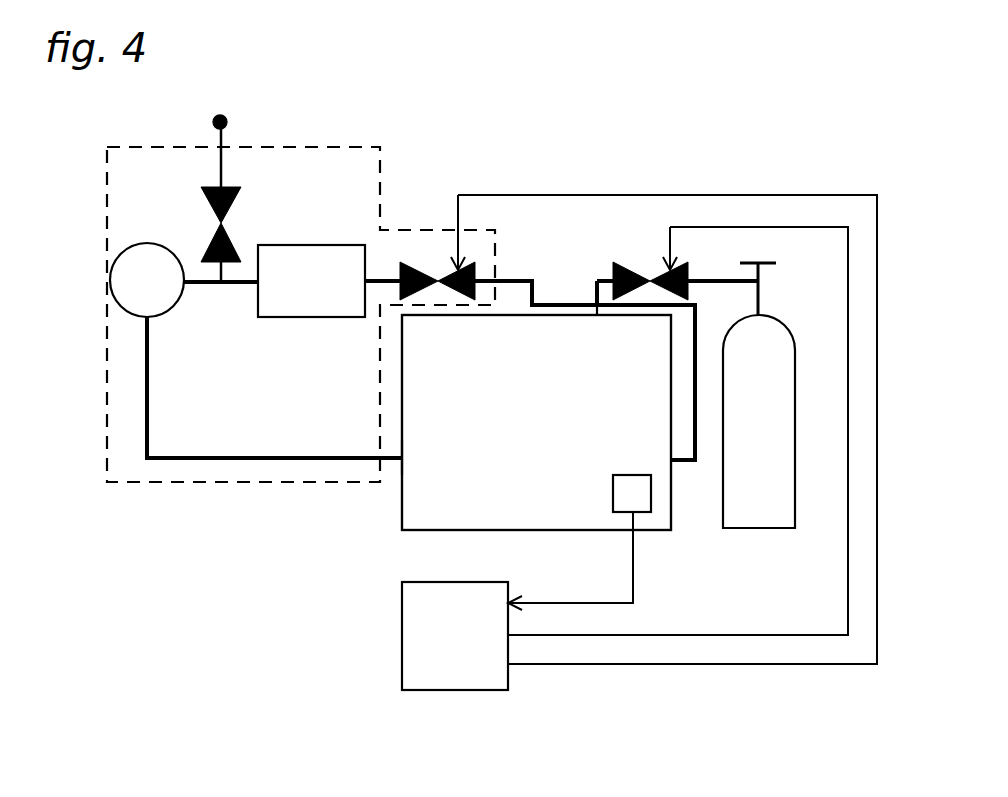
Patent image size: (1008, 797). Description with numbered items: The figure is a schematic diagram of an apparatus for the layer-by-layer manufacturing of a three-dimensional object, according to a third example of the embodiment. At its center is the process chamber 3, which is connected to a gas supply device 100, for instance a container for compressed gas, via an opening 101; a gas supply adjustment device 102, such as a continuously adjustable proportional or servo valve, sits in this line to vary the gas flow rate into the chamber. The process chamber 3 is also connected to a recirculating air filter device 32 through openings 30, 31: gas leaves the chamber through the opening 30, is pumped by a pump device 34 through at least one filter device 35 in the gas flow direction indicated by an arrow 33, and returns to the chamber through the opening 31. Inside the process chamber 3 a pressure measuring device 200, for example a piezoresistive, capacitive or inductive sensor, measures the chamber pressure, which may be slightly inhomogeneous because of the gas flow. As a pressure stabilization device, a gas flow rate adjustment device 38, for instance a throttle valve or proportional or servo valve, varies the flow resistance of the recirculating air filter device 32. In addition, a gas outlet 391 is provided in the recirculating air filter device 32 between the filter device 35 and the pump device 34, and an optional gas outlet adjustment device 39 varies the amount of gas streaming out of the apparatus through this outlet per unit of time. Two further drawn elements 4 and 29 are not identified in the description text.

The process chamber 3 is at (446, 503).
The chamber wall 4 is at (400, 500).
The controller 29 is at (639, 442).
The opening 30 is at (666, 442).
The opening 31 is at (418, 464).
The recirculating air filter device 32 is at (380, 175).
The arrow 33 is at (272, 443).
The pump device 34 is at (147, 280).
The filter device 35 is at (292, 281).
The gas flow rate adjustment device 38 is at (410, 267).
The gas outlet adjustment device 39 is at (237, 203).
The gas outlet 391 is at (214, 117).
The gas supply device 100 is at (741, 395).
The opening 101 is at (608, 327).
The gas supply adjustment device 102 is at (628, 263).
The pressure measuring device 200 is at (627, 495).